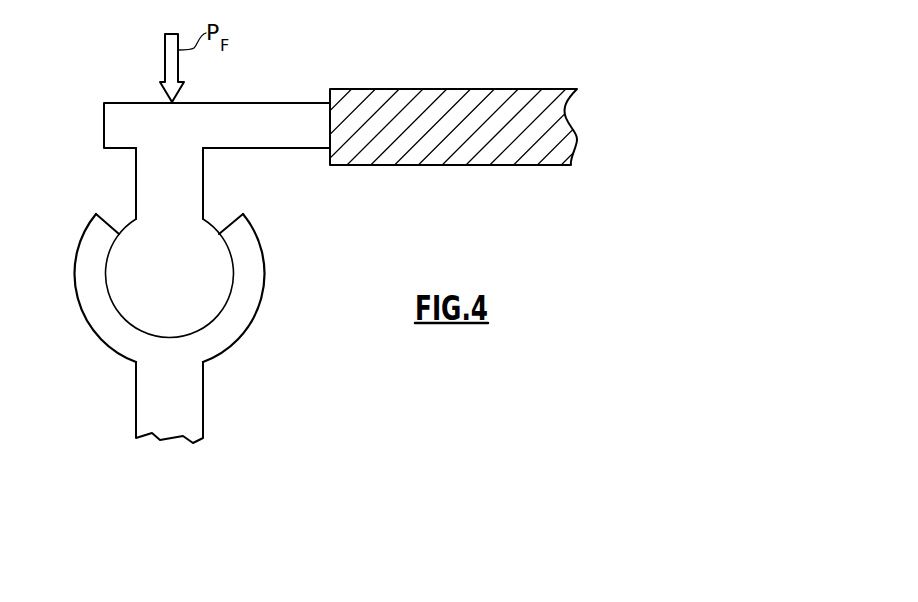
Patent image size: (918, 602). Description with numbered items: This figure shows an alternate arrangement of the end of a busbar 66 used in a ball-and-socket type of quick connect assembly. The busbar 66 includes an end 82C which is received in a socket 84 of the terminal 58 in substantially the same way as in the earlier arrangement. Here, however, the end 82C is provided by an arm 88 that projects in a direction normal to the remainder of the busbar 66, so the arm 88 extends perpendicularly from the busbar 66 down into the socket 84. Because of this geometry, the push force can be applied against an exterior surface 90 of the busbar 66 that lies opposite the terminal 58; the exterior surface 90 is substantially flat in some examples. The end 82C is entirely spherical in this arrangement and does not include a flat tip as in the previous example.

The terminal 58 is at (203, 328).
The busbar 66 is at (529, 89).
The end 82C is at (207, 200).
The socket 84 is at (263, 283).
The arm 88 is at (152, 185).
The exterior surface 90 is at (253, 103).